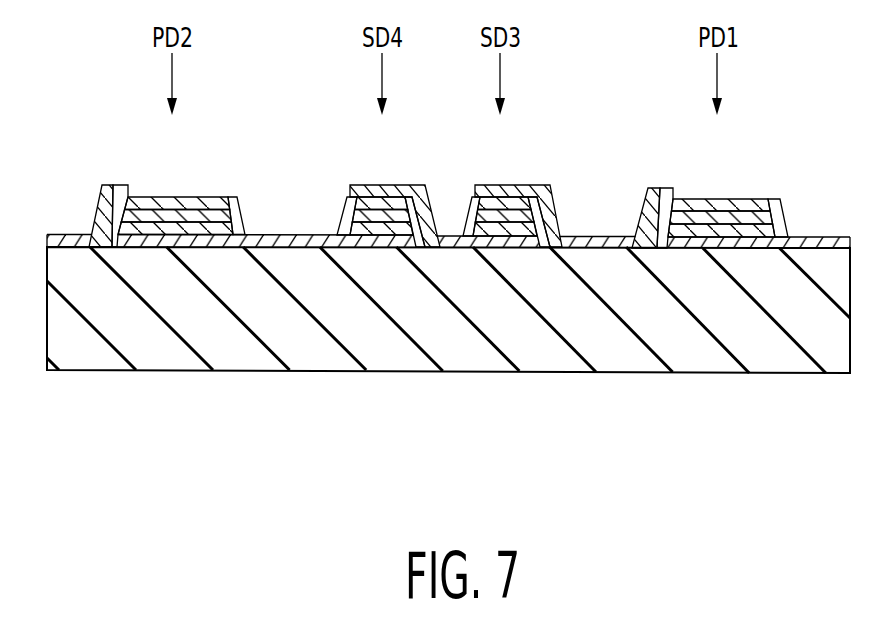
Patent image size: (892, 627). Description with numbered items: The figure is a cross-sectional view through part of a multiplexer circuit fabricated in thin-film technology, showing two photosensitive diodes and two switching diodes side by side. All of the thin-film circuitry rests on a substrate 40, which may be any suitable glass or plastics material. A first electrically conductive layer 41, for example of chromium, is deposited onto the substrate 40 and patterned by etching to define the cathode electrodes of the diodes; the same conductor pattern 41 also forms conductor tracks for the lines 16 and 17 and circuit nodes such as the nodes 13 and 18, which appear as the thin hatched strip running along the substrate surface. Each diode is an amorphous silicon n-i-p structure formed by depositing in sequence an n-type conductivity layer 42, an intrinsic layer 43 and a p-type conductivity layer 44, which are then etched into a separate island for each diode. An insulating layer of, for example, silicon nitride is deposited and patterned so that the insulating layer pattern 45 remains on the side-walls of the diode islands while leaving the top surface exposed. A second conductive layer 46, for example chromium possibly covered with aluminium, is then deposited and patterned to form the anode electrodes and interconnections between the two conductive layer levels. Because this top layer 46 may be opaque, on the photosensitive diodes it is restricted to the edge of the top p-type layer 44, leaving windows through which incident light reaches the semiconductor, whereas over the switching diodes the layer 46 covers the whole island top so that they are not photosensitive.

The circuit node 13 is at (448, 238).
The line 16 is at (835, 243).
The line 17 is at (63, 234).
The circuit node 18 is at (603, 243).
The substrate 40 is at (90, 345).
The first electrically conductive layer 41 is at (147, 240).
The n-type conductivity amorphous silicon layer 42 is at (202, 228).
The intrinsic amorphous silicon layer 43 is at (192, 197).
The p-type conductivity amorphous silicon layer 44 is at (143, 197).
The insulating layer pattern 45 is at (235, 205).
The second conductive layer 46 is at (114, 185).